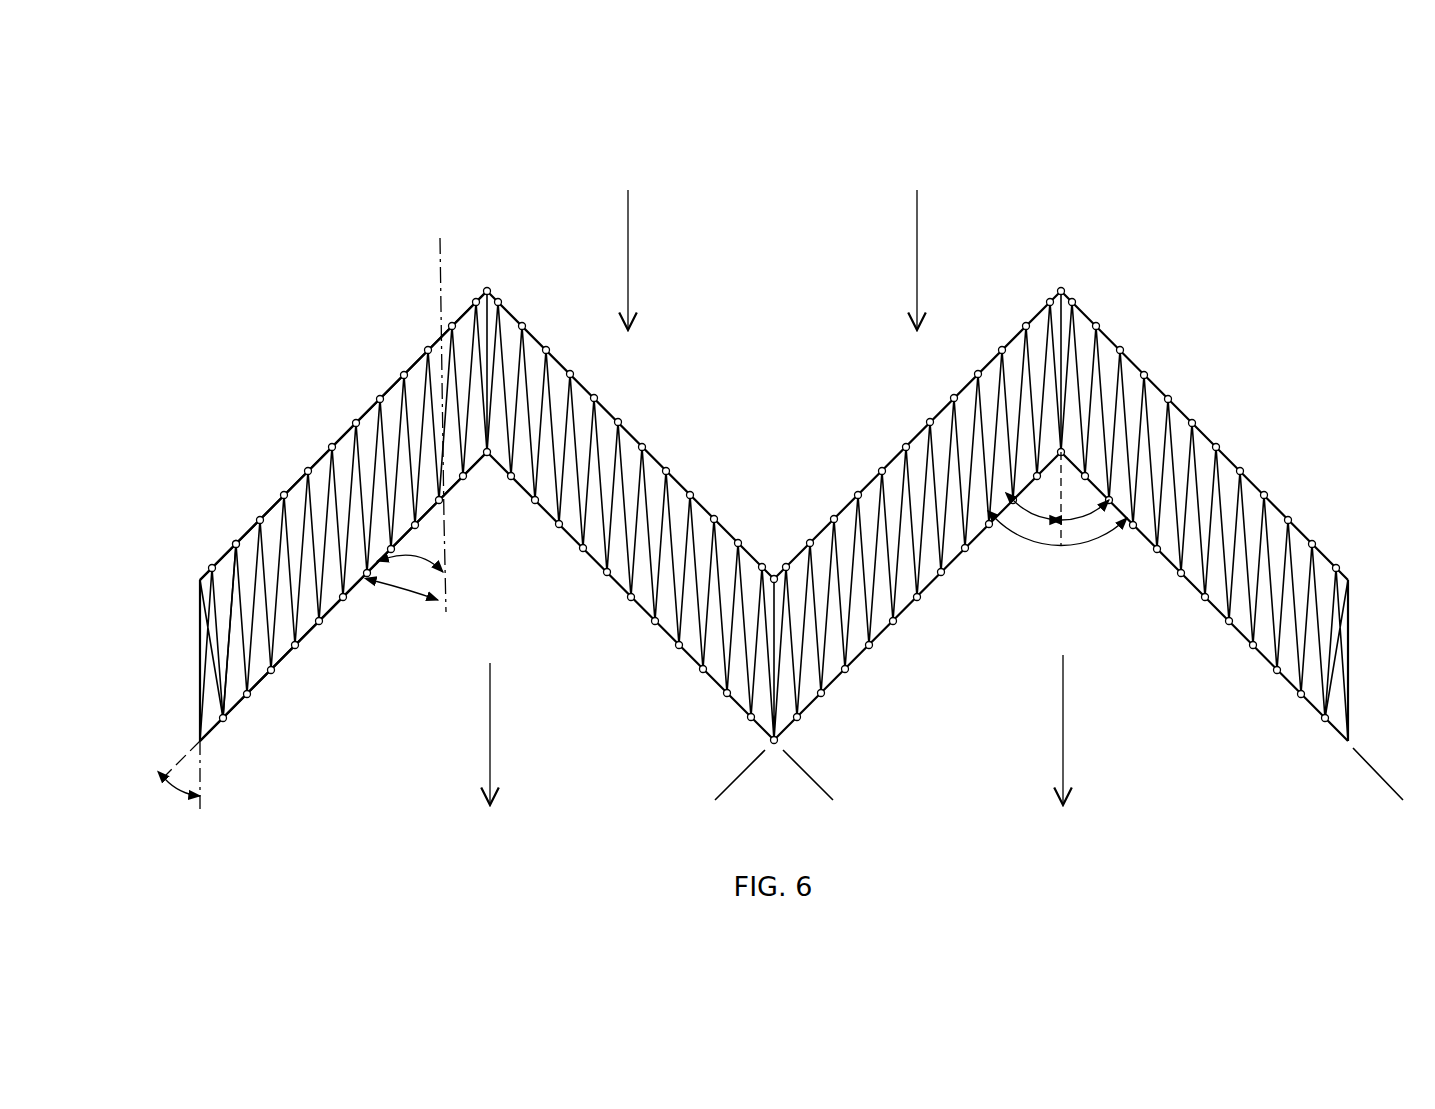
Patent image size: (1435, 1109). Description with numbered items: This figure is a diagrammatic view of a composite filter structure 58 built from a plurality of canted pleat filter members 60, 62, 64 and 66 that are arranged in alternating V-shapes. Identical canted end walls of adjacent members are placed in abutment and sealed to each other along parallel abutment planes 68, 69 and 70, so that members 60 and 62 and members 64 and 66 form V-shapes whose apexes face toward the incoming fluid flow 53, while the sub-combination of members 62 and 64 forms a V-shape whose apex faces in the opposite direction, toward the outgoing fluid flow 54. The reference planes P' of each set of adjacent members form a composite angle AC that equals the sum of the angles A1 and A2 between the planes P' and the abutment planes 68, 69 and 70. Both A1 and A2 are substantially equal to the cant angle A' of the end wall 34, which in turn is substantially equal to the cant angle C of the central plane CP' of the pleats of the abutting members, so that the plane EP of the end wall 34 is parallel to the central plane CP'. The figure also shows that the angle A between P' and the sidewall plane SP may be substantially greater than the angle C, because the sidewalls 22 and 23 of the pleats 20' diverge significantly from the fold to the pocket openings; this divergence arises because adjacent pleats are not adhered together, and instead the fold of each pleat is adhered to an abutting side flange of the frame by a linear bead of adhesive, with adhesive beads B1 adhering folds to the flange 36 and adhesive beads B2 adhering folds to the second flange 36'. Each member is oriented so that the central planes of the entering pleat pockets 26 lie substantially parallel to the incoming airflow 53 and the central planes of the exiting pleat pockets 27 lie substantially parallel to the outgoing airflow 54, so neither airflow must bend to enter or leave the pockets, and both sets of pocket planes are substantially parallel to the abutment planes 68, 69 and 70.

The composite filter structure 58 is at (378, 268).
The canted pleat filter member 60 is at (342, 434).
The canted pleat filter member 62 is at (666, 460).
The canted pleat filter member 64 is at (863, 480).
The canted pleat filter member 66 is at (1210, 430).
The abutment plane 68 is at (490, 292).
The abutment plane 70 is at (1064, 292).
The abutment plane 69 is at (773, 576).
The incoming fluid flow 53 is at (772, 241).
The outgoing fluid flow 54 is at (775, 748).
The entering pleat pockets 26 is at (316, 452).
The exiting pleat pockets 27 is at (266, 680).
The flange 36 is at (774, 596).
The second flange 36' is at (775, 433).
The pleats 20' is at (732, 539).
The sidewall 22 is at (228, 628).
The sidewall 23 is at (236, 546).
The end wall 34 is at (200, 680).
The adhesive beads B1 is at (200, 740).
The adhesive beads B2 is at (216, 578).
The central plane of the pleats CP' is at (476, 359).
The sidewall plane SP is at (447, 572).
The plane of the end wall EP is at (200, 805).
The reference plane P' is at (748, 788).
The angle between P' and SP A is at (406, 634).
The cant angle of the central plane C is at (413, 568).
The cant angle of the end walls A' is at (169, 822).
The angle between P' and abutment plane A1 is at (1035, 520).
The angle between P' and abutment plane A2 is at (1087, 520).
The composite angle AC is at (1061, 548).